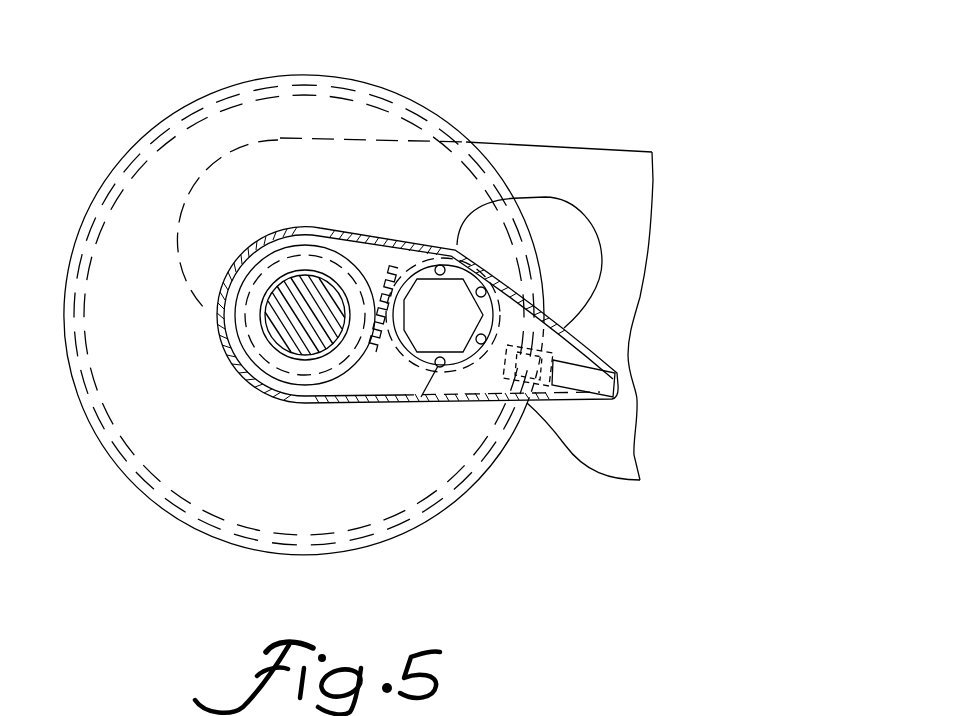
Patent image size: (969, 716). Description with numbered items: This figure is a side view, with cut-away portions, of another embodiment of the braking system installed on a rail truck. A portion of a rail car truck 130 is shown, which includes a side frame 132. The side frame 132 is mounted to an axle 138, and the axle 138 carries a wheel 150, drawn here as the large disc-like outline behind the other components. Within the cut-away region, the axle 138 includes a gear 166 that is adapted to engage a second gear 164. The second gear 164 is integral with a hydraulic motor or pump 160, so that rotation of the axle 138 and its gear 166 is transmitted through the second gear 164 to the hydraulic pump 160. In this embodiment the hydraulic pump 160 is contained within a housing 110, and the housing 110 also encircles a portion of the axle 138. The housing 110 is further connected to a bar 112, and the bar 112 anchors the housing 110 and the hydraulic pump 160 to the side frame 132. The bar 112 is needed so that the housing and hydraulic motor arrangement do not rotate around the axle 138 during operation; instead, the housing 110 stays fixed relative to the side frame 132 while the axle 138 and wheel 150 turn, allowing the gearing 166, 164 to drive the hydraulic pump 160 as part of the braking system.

The rail car truck 130 is at (543, 92).
The side frame 132 is at (598, 158).
The wheel 150 is at (148, 430).
The housing 110 is at (210, 300).
The axle 138 is at (322, 282).
The gear 166 is at (325, 373).
The second gear 164 is at (397, 275).
The hydraulic motor or pump 160 is at (450, 346).
The bar 112 is at (620, 390).